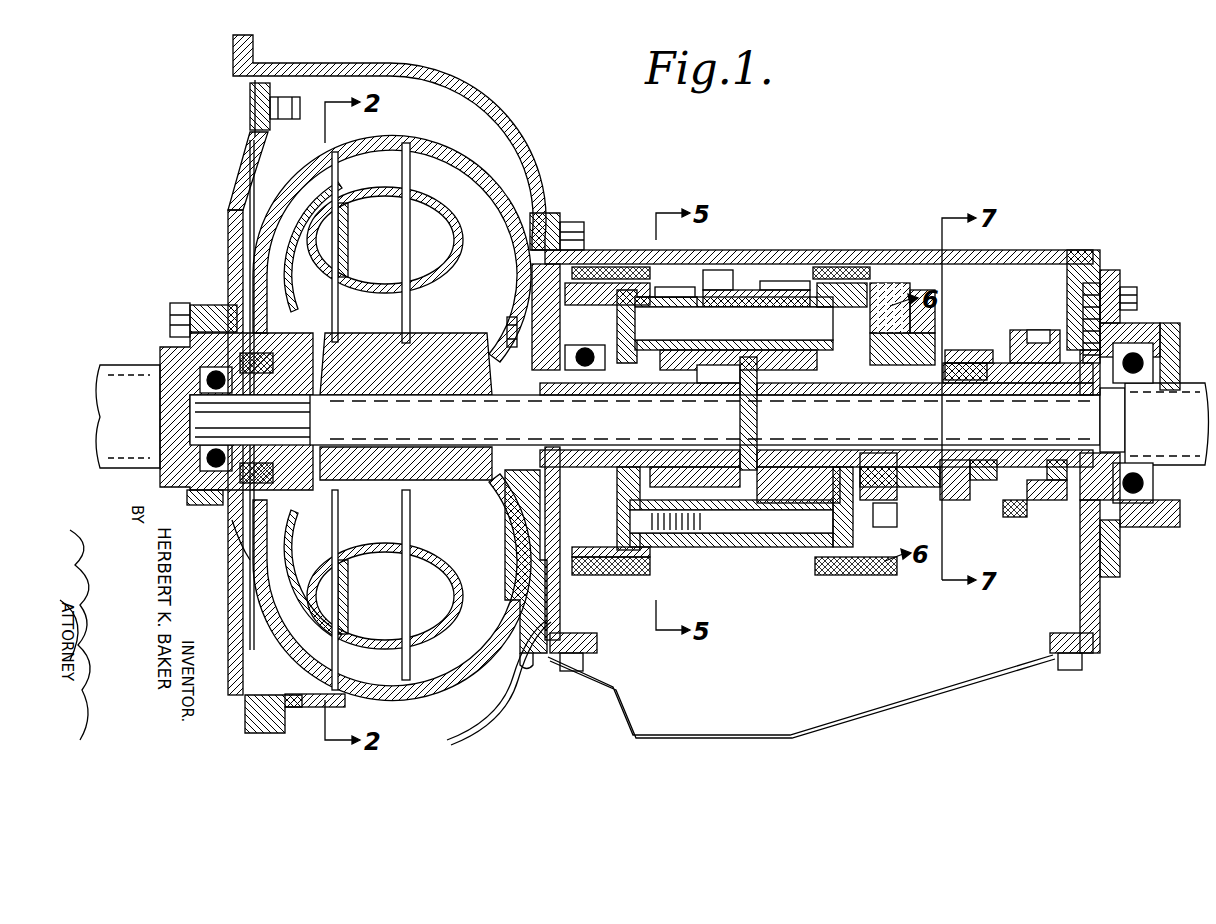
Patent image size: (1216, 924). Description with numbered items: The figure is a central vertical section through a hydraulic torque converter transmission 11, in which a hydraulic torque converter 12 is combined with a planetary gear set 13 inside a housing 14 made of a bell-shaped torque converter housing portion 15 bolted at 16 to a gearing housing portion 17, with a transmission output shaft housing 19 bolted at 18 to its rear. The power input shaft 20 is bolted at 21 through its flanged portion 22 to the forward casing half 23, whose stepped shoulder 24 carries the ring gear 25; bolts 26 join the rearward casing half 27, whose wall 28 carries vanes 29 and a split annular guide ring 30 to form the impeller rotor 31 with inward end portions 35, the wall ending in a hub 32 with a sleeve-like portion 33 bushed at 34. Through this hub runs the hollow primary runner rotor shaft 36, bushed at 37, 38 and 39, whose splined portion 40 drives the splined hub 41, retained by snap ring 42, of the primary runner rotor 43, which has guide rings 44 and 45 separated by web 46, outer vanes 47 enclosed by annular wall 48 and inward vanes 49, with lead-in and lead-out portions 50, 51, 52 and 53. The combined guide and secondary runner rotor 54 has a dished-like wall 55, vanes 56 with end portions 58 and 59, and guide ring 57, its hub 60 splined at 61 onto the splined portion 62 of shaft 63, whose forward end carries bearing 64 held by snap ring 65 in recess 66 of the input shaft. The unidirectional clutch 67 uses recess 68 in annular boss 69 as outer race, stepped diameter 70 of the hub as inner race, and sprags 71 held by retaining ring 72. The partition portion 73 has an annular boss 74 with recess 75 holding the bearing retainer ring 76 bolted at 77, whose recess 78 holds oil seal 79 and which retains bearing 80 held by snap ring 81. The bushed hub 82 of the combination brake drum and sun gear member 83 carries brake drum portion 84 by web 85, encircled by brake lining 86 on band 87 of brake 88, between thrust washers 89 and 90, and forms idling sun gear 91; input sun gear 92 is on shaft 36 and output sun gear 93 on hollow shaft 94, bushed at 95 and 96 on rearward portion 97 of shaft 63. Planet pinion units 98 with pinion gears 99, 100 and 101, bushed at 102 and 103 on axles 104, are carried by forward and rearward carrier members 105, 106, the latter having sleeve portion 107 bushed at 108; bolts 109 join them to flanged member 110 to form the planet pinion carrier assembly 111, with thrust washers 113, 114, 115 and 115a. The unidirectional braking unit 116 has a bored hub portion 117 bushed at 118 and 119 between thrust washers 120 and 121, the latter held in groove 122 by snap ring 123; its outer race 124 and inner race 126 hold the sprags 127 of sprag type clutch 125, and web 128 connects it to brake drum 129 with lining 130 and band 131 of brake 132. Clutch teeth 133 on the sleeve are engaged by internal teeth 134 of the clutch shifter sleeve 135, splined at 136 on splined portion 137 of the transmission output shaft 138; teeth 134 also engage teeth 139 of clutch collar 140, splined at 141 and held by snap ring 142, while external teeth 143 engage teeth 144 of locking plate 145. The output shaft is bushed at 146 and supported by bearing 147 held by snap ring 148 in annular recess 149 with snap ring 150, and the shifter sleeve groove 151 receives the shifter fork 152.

The hydraulic torque converter transmission 11 is at (548, 212).
The hydraulic torque converter 12 is at (452, 94).
The planetary gear set 13 is at (630, 290).
The housing 14 is at (539, 210).
The hydraulic torque converter housing portion 15 is at (440, 86).
The bolts 16 is at (578, 222).
The gearing housing portion 17 is at (605, 250).
The bolts 18 is at (1110, 278).
The transmission output shaft housing 19 is at (1128, 295).
The power input shaft 20 is at (112, 417).
The bolts 21 is at (178, 305).
The flanged portion 22 is at (198, 272).
The forward casing half 23 is at (230, 242).
The stepped shoulder 24 is at (248, 142).
The ring gear 25 is at (248, 106).
The bolts 26 is at (285, 98).
The rearward casing half 27 is at (390, 65).
The wall 28 is at (537, 175).
The vanes 29 is at (473, 248).
The split annular guide ring 30 is at (455, 221).
The impeller rotor 31 is at (434, 152).
The hub 32 is at (443, 470).
The sleeve-like portion 33 is at (513, 482).
The bushing 34 is at (467, 472).
The inward end portions 35 is at (415, 330).
The hollow primary runner rotor shaft 36 is at (517, 480).
The bushing 37 is at (387, 382).
The bushing 38 is at (585, 395).
The bushing 39 is at (690, 395).
The exteriorly splined portion 40 is at (377, 472).
The splined hub 41 is at (387, 497).
The snap ring 42 is at (330, 470).
The primary runner rotor 43 is at (352, 190).
The split annular guide ring 44 is at (380, 610).
The split annular guide ring 45 is at (360, 573).
The web 46 is at (350, 592).
The outer series of vanes 47 is at (372, 183).
The annular wall 48 is at (380, 713).
The inward series of vanes 49 is at (367, 300).
The lead-in portion 50 is at (395, 411).
The lead-out portion 51 is at (348, 163).
The lead-in portion 52 is at (348, 325).
The lead-out portion 53 is at (366, 421).
The combined guide and secondary runner rotor 54 is at (258, 192).
The dished-like wall 55 is at (267, 212).
The vanes 56 is at (283, 233).
The split annular guide ring 57 is at (313, 247).
The inward end portion 58 is at (313, 470).
The outward end portion 59 is at (315, 183).
The hub 60 is at (292, 550).
The internal splines 61 is at (297, 568).
The splined portion 62 is at (307, 418).
The guide and secondary runner rotor shaft 63 is at (478, 423).
The anti-friction bearing 64 is at (170, 360).
The snap ring 65 is at (200, 383).
The recess 66 is at (217, 473).
The unidirectional clutch 67 is at (227, 533).
The recess 68 is at (268, 585).
The annular boss 69 is at (237, 540).
The stepped diameter 70 is at (268, 541).
The sprags 71 is at (270, 562).
The retaining ring 72 is at (267, 533).
The partition portion 73 is at (530, 660).
The annular boss 74 is at (547, 640).
The recess 75 is at (513, 620).
The bearing retainer ring 76 is at (523, 595).
The bolts 77 is at (533, 313).
The recess 78 is at (533, 532).
The oil seal 79 is at (527, 525).
The anti-friction bearing 80 is at (567, 345).
The snap ring 81 is at (563, 310).
The bushed hub 82 is at (657, 523).
The combination brake drum and sun gear member 83 is at (657, 553).
The brake drum portion 84 is at (573, 560).
The web 85 is at (633, 517).
The brake lining 86 is at (605, 577).
The brake band 87 is at (625, 577).
The brake 88 is at (637, 582).
The thrust washer 89 is at (570, 370).
The thrust washer 90 is at (707, 530).
The forward or idling sun gear 91 is at (717, 553).
The intermediate or input sun gear 92 is at (720, 520).
The rearward or output sun gear 93 is at (777, 540).
The hollow shaft 94 is at (800, 395).
The bushing 95 is at (760, 447).
The bushing 96 is at (923, 453).
The rearward portion 97 is at (975, 429).
The planet pinion units 98 is at (748, 288).
The pinion gear 99 is at (682, 287).
The pinion gear 100 is at (723, 270).
The pinion gear 101 is at (775, 281).
The bushing 102 is at (734, 323).
The bushing 103 is at (800, 325).
The planet pinion axles 104 is at (708, 324).
The forward planet pinion carrier member 105 is at (740, 540).
The rearward planet pinion carrier member 106 is at (803, 533).
The sleeve portion 107 is at (829, 397).
The bushing 108 is at (880, 395).
The bolts 109 is at (800, 533).
The flanged member 110 is at (733, 500).
The planet pinion carrier assembly 111 is at (713, 550).
The thrust washer 113 is at (662, 287).
The thrust washer 114 is at (835, 267).
The thrust washer 115 is at (767, 527).
The thrust washer 115a is at (803, 560).
The unidirectional braking unit 116 is at (905, 293).
The bored hub portion 117 is at (900, 320).
The bushing 118 is at (897, 523).
The bushing 119 is at (907, 497).
The thrust washer 120 is at (840, 283).
The thrust washer 121 is at (908, 352).
The groove 122 is at (950, 350).
The snap ring 123 is at (950, 368).
The outer race 124 is at (876, 283).
The sprag type clutch 125 is at (900, 283).
The inner race 126 is at (884, 283).
The sprags 127 is at (892, 283).
The web 128 is at (840, 577).
The brake drum 129 is at (897, 575).
The brake lining 130 is at (883, 582).
The brake band 131 is at (880, 588).
The brake 132 is at (867, 588).
The clutch teeth 133 is at (933, 490).
The clutch teeth 134 is at (950, 487).
The clutch shifter sleeve 135 is at (1030, 493).
The internal splines 136 is at (1043, 487).
The splined portion 137 is at (1067, 483).
The transmission output shaft 138 is at (1168, 420).
The clutch teeth 139 is at (970, 487).
The clutch collar 140 is at (987, 487).
The internal splines 141 is at (993, 360).
The snap ring 142 is at (990, 358).
The clutch teeth 143 is at (1035, 330).
The clutch teeth 144 is at (1080, 337).
The locking plate 145 is at (1092, 290).
The bushing 146 is at (1023, 445).
The anti-friction bearing 147 is at (1160, 487).
The snap ring 148 is at (1165, 323).
The annular recess 149 is at (1160, 527).
The snap ring 150 is at (1150, 328).
The groove 151 is at (1023, 507).
The shifter fork 152 is at (1027, 517).